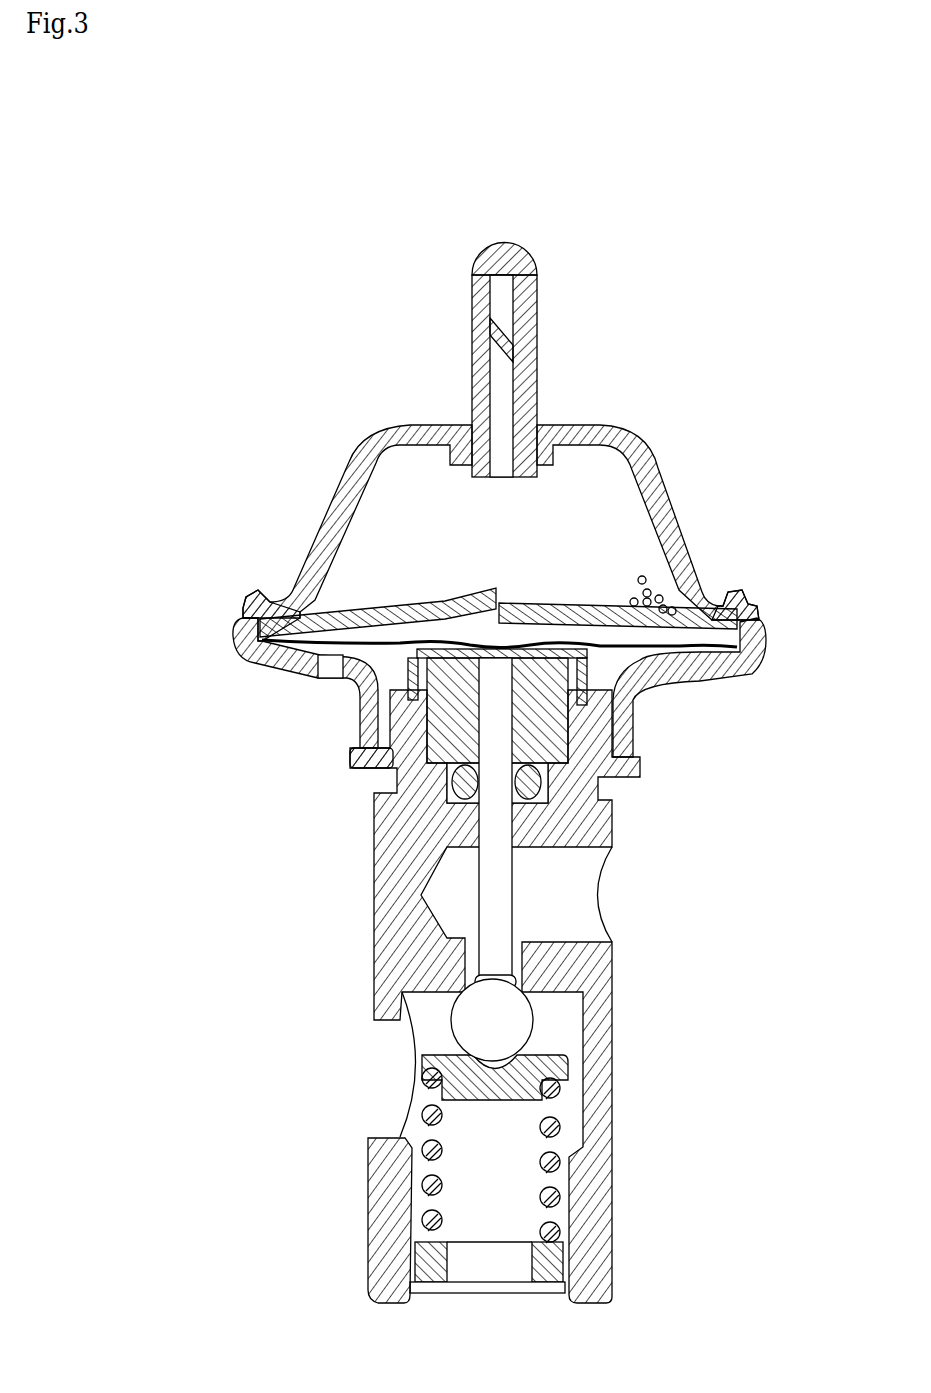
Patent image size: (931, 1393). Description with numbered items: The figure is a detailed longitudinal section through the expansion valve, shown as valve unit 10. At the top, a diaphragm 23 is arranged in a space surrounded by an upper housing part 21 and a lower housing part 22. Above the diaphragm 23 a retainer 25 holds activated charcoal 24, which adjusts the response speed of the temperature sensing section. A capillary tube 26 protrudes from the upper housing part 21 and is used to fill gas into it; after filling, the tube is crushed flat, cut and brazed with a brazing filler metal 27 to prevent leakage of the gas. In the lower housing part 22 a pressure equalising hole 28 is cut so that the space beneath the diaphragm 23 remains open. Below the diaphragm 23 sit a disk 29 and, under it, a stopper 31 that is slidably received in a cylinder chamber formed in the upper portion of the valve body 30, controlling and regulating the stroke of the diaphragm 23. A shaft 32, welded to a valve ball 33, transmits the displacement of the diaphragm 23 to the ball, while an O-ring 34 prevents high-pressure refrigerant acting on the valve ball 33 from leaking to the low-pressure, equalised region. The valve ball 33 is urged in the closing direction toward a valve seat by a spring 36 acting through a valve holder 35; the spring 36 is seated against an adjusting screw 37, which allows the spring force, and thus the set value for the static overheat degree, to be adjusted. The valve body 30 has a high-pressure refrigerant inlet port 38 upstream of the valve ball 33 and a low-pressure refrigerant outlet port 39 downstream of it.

The valve unit 10 is at (612, 389).
The upper housing part 21 is at (662, 492).
The lower housing part 22 is at (762, 640).
The diaphragm 23 is at (680, 680).
The activated charcoal 24 is at (648, 579).
The retainer 25 is at (380, 600).
The capillary tube 26 is at (472, 337).
The brazing filler metal 27 is at (539, 271).
The pressure equalising hole 28 is at (333, 675).
The disk 29 is at (605, 760).
The valve body 30 is at (603, 828).
The stopper 31 is at (430, 752).
The shaft 32 is at (515, 904).
The valve ball 33 is at (538, 1020).
The O-ring 34 is at (578, 787).
The valve holder 35 is at (558, 1055).
The spring 36 is at (563, 1123).
The adjusting screw 37 is at (549, 1290).
The high-pressure refrigerant inlet port 38 is at (583, 920).
The low-pressure refrigerant outlet port 39 is at (396, 1083).